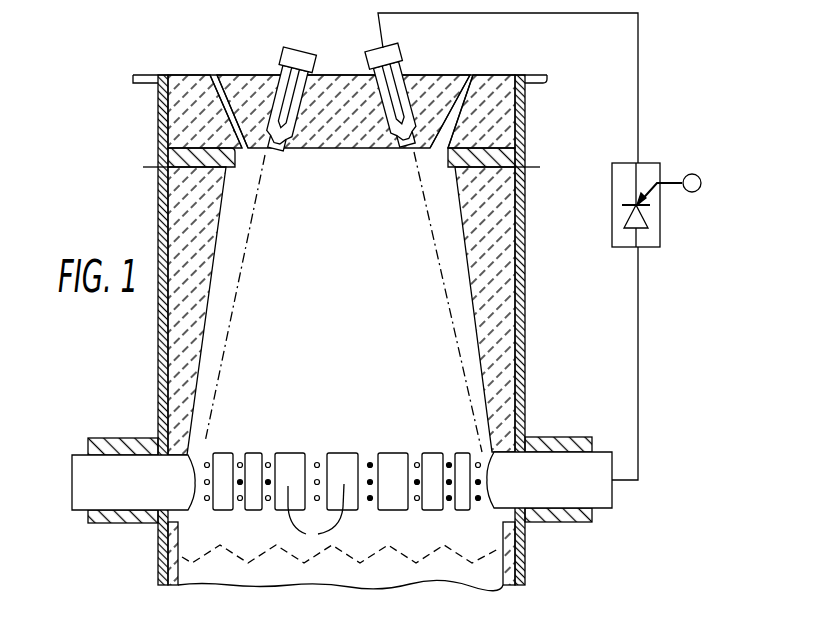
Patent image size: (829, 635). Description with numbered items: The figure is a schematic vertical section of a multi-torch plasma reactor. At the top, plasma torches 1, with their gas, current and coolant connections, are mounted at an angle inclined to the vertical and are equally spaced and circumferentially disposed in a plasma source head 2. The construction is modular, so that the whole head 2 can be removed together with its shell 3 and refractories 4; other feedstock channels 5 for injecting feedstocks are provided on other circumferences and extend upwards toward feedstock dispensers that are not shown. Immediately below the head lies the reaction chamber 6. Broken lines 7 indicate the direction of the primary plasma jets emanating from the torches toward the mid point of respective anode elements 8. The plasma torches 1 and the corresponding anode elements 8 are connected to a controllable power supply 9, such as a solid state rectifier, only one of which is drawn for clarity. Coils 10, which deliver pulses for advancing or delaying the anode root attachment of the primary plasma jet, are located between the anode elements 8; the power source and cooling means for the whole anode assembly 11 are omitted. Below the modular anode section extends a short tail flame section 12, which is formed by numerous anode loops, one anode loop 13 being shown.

The plasma torches 1 is at (372, 57).
The plasma source head 2 is at (577, 80).
The shell 3 is at (158, 121).
The refractories 4 is at (197, 77).
The feedstock channels 5 is at (470, 77).
The reaction chamber 6 is at (548, 173).
The broken lines 7 is at (420, 213).
The anode elements 8 is at (136, 495).
The controllable power supply 9 is at (612, 198).
The coils 10 is at (418, 462).
The anode assembly 11 is at (60, 438).
The tail flame section 12 is at (424, 495).
The anode loop 13 is at (289, 531).